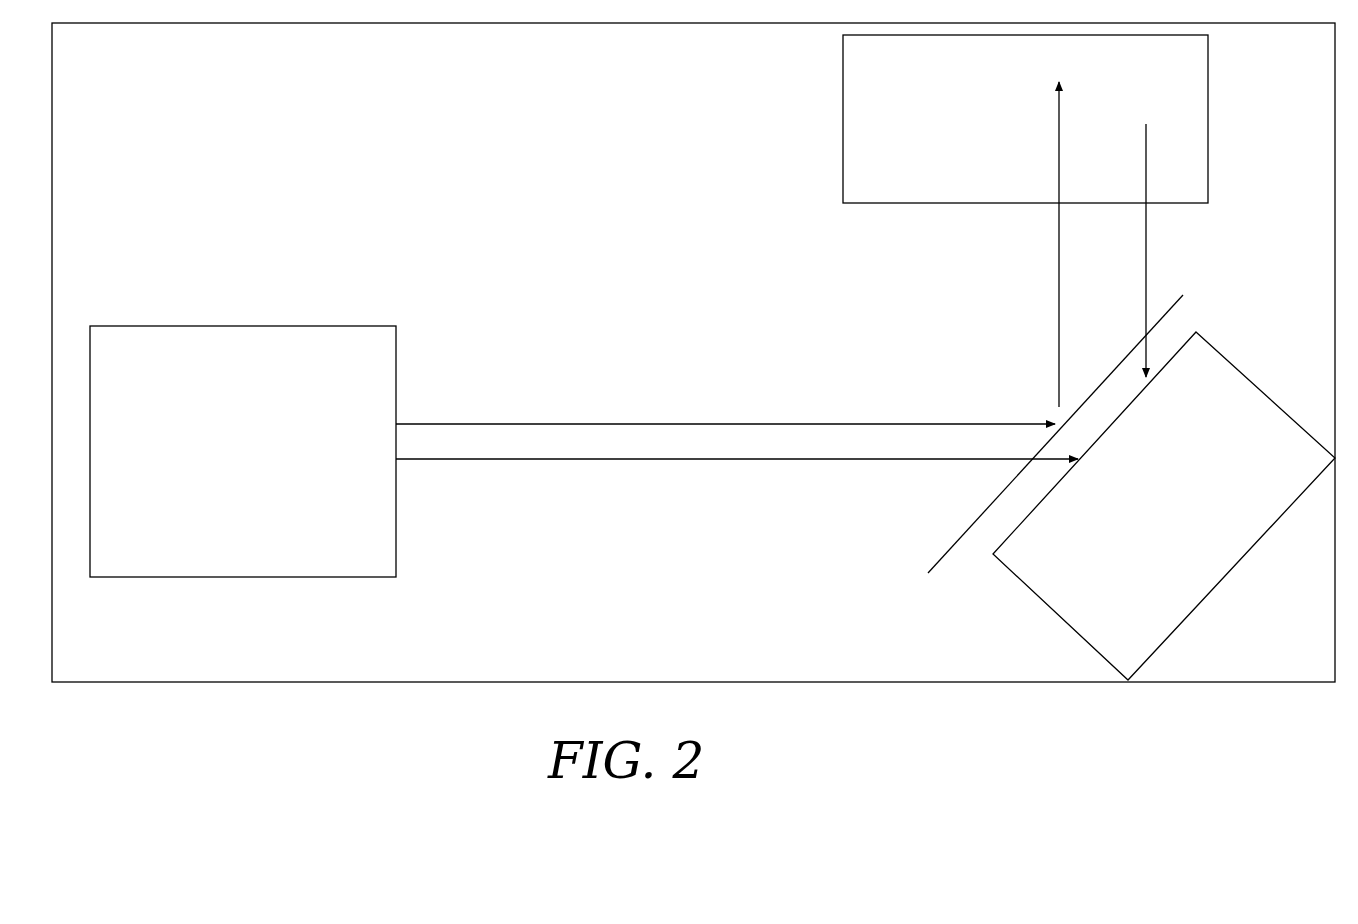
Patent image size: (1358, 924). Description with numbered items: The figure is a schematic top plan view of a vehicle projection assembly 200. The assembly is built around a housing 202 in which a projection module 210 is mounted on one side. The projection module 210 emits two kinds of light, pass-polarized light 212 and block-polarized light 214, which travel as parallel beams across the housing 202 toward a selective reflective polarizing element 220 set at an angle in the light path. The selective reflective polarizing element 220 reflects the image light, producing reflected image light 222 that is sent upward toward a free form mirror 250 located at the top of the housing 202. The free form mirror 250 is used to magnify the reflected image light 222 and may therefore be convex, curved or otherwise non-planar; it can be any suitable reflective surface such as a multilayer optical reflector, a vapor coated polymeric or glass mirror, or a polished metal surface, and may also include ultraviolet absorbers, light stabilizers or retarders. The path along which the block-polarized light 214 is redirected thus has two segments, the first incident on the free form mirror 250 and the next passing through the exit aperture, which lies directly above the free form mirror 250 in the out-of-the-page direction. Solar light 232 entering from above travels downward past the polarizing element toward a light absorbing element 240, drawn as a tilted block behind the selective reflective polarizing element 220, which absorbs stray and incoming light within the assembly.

The vehicle projection assembly 200 is at (185, 699).
The housing 202 is at (217, 24).
The projection module 210 is at (203, 375).
The pass-polarized light 212 is at (474, 459).
The block-polarized light 214 is at (545, 433).
The selective reflective polarizing element 220 is at (972, 523).
The reflected image light 222 is at (1058, 297).
The solar light 232 is at (1147, 295).
The light absorbing element 240 is at (1164, 506).
The free form mirror 250 is at (897, 103).